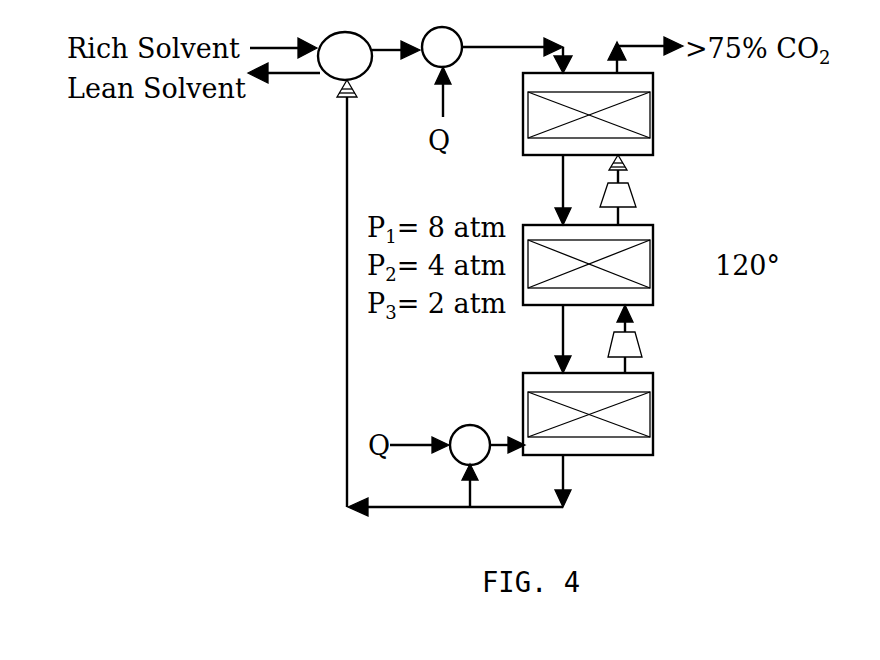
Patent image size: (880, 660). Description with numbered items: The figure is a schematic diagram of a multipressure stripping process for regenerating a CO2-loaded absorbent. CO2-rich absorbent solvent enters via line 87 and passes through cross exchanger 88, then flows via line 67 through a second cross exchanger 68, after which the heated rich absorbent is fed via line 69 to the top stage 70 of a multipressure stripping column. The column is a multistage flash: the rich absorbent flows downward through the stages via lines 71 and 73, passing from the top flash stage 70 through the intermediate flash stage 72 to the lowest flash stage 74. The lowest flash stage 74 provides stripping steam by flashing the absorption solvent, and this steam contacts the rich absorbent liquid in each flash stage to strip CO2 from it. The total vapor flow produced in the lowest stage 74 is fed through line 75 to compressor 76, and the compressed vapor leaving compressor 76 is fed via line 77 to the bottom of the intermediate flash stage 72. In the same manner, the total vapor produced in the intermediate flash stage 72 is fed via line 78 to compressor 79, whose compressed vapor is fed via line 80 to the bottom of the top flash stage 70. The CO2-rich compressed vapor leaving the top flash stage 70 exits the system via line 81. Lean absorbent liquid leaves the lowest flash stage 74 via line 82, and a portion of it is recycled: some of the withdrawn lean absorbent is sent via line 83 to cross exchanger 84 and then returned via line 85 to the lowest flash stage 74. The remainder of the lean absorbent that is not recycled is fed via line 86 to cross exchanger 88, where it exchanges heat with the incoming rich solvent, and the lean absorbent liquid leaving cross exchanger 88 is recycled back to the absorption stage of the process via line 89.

The line 67 is at (381, 47).
The cross exchanger 68 is at (463, 39).
The line 69 is at (570, 59).
The top flash stage 70 is at (653, 128).
The line 71 is at (562, 190).
The intermediate flash stage 72 is at (653, 265).
The line 73 is at (558, 325).
The lowest flash stage 74 is at (653, 415).
The line 75 is at (633, 364).
The compressor 76 is at (641, 345).
The line 77 is at (632, 316).
The line 78 is at (627, 213).
The compressor 79 is at (637, 193).
The line 80 is at (630, 165).
The line 81 is at (626, 45).
The line 82 is at (567, 472).
The line 83 is at (465, 492).
The cross exchanger 84 is at (455, 432).
The line 85 is at (504, 445).
The line 86 is at (405, 533).
The line 87 is at (285, 19).
The cross exchanger 88 is at (331, 33).
The line 89 is at (291, 72).